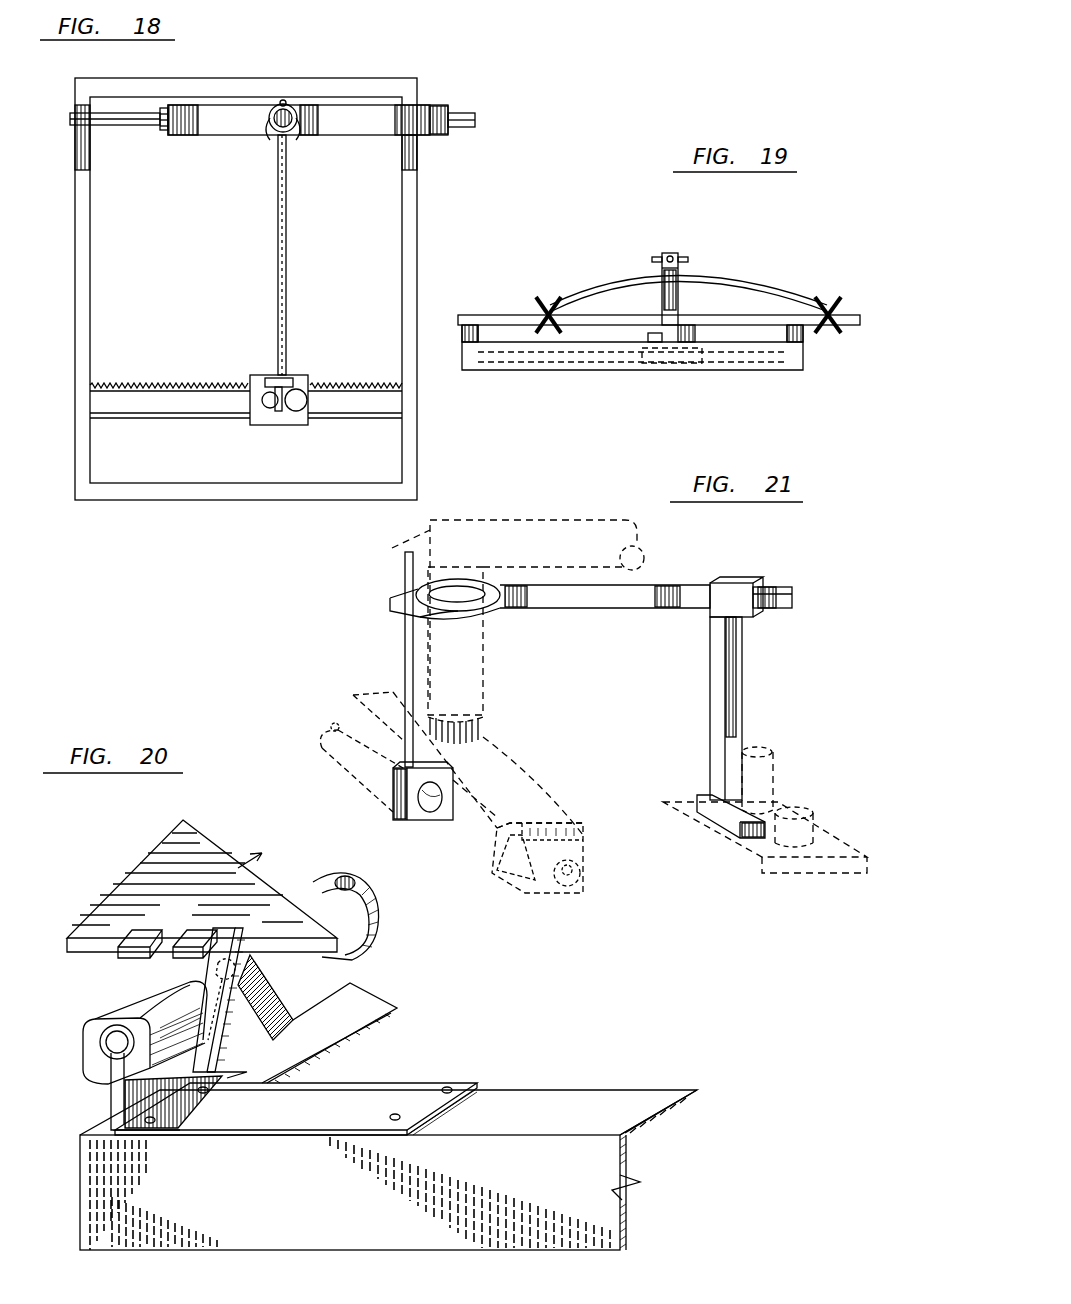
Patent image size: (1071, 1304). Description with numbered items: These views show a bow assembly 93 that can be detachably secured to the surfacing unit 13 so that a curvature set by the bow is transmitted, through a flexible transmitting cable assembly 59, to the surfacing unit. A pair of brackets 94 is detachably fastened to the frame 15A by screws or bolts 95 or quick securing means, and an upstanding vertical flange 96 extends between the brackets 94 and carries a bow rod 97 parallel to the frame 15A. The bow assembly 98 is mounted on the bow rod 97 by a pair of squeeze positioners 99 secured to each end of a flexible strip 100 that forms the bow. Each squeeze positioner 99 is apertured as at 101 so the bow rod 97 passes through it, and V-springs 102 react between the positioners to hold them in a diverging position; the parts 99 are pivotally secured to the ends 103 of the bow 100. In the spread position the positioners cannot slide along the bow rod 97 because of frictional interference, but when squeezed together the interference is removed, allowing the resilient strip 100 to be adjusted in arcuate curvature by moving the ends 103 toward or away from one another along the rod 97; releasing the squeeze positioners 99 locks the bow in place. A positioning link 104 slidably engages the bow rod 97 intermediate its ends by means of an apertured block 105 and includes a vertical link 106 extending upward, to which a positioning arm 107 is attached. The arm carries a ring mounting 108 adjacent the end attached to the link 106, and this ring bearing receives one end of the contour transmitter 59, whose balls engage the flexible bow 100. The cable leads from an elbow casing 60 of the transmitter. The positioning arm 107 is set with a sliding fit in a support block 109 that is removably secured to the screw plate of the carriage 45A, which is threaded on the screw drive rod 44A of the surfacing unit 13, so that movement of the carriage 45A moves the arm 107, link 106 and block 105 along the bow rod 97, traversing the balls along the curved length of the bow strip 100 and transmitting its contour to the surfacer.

In FIG. 18, the surfacing unit 13 is at (420, 262).
In FIG. 19, the surfacing unit 13 is at (570, 378).
In FIG. 20, the frame 15A is at (640, 1130).
In FIG. 18, the screw drive rod 44A is at (180, 386).
In FIG. 18, the carriage 45A is at (290, 425).
In FIG. 19, the carriage 45A is at (655, 365).
In FIG. 21, the carriage 45A is at (735, 873).
In FIG. 21, the flexible transmitting cable assembly 59 is at (645, 553).
In FIG. 21, the elbow casing 60 is at (496, 610).
In FIG. 18, the bow assembly 93 is at (190, 262).
In FIG. 19, the bow assembly 93 is at (752, 250).
In FIG. 21, the bow assembly 93 is at (745, 567).
In FIG. 18, the brackets 94 is at (75, 158).
In FIG. 19, the brackets 94 is at (805, 342).
In FIG. 20, the brackets 94 is at (425, 1083).
In FIG. 20, the screws or bolts 95 is at (393, 1117).
In FIG. 20, the upstanding vertical flange 96 is at (111, 1108).
In FIG. 18, the bow rod 97 is at (136, 126).
In FIG. 19, the bow rod 97 is at (482, 315).
In FIG. 21, the bow rod 97 is at (483, 850).
In FIG. 20, the bow rod 97 is at (83, 1060).
In FIG. 20, the bow assembly 98 is at (115, 858).
In FIG. 18, the squeeze positioners 99 is at (168, 130).
In FIG. 19, the squeeze positioners 99 is at (545, 310).
In FIG. 20, the squeeze positioners 99 is at (290, 1010).
In FIG. 18, the flexible strip 100 is at (350, 135).
In FIG. 19, the flexible strip 100 is at (748, 284).
In FIG. 21, the flexible strip 100 is at (527, 762).
In FIG. 20, the flexible strip 100 is at (92, 908).
In FIG. 20, the aperture 101 is at (186, 1028).
In FIG. 20, the V-springs 102 is at (212, 968).
In FIG. 18, the ends of the bow 103 is at (275, 138).
In FIG. 20, the ends of the bow 103 is at (328, 932).
In FIG. 21, the positioning link 104 is at (400, 748).
In FIG. 21, the apertured block 105 is at (420, 822).
In FIG. 18, the vertical link 106 is at (286, 100).
In FIG. 21, the vertical link 106 is at (405, 650).
In FIG. 18, the positioning arm 107 is at (286, 226).
In FIG. 19, the positioning arm 107 is at (668, 253).
In FIG. 21, the positioning arm 107 is at (606, 608).
In FIG. 19, the ring mounting 108 is at (684, 262).
In FIG. 18, the support block 109 is at (290, 378).
In FIG. 19, the support block 109 is at (678, 290).
In FIG. 21, the support block 109 is at (712, 762).